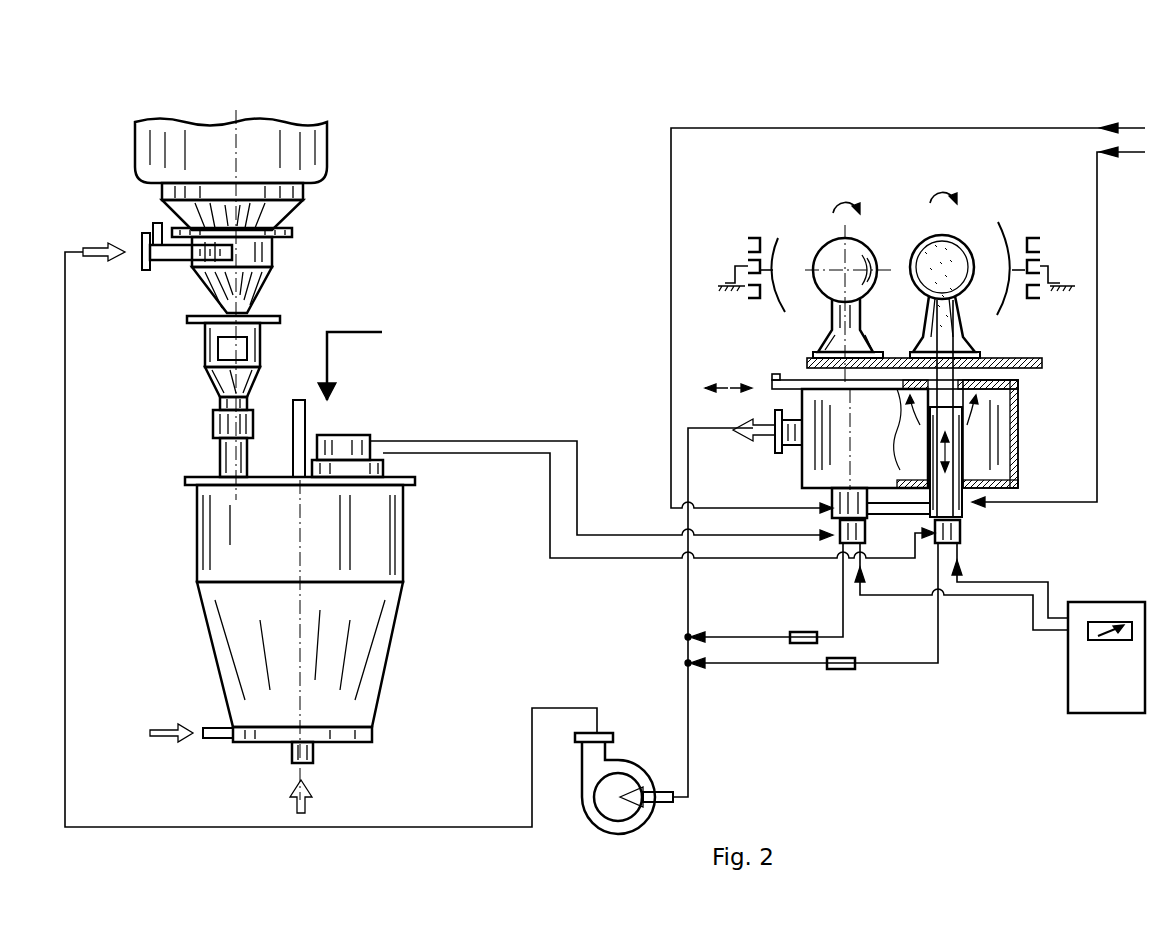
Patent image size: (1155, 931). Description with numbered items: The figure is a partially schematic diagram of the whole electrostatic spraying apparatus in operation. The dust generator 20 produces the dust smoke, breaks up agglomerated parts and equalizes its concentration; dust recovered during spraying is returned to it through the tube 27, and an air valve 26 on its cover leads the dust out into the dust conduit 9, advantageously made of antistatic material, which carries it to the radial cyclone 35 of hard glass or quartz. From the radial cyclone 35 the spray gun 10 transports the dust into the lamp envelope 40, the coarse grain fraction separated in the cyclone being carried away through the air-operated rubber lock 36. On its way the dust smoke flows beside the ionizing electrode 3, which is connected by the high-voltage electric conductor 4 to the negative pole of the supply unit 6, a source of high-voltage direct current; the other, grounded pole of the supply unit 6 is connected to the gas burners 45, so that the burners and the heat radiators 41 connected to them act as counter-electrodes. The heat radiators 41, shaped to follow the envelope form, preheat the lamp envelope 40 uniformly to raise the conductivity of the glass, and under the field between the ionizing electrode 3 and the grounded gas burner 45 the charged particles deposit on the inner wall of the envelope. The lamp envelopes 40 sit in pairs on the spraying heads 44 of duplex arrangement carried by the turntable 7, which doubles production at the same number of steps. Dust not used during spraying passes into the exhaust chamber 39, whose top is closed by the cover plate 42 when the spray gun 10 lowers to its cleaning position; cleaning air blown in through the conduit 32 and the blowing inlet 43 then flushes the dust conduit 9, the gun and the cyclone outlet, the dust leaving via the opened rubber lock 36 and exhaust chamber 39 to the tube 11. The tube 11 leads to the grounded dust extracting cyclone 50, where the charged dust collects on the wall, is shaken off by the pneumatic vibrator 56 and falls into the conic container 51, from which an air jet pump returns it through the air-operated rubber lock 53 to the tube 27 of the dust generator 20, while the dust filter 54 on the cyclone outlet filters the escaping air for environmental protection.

The dust filter 54 is at (305, 152).
The dust extracting cyclone 50 is at (262, 290).
The pneumatic vibrator 56 is at (225, 348).
The conic container 51 is at (228, 380).
The air-operated rubber lock 53 is at (218, 424).
The tube 27 is at (232, 455).
The dust generator 20 is at (220, 513).
The conduit 32 is at (337, 404).
The air valve 26 is at (357, 437).
The dust conduit 9 is at (545, 453).
The tube 11 is at (688, 718).
The ionizing electrode 3 is at (955, 245).
The lamp envelope 40 is at (858, 258).
The heat radiator 41 is at (778, 240).
The gas burner 45 is at (748, 245).
The spraying head 44 is at (910, 355).
The cover plate 42 is at (772, 378).
The turntable 7 is at (1042, 362).
The exhaust chamber 39 is at (1018, 420).
The blowing inlet 43 is at (750, 508).
The spray gun 10 is at (963, 508).
The radial cyclone 35 is at (837, 548).
The high-voltage electric conductor 4 is at (1020, 596).
The supply unit 6 is at (1110, 602).
The rubber lock 36 is at (840, 669).